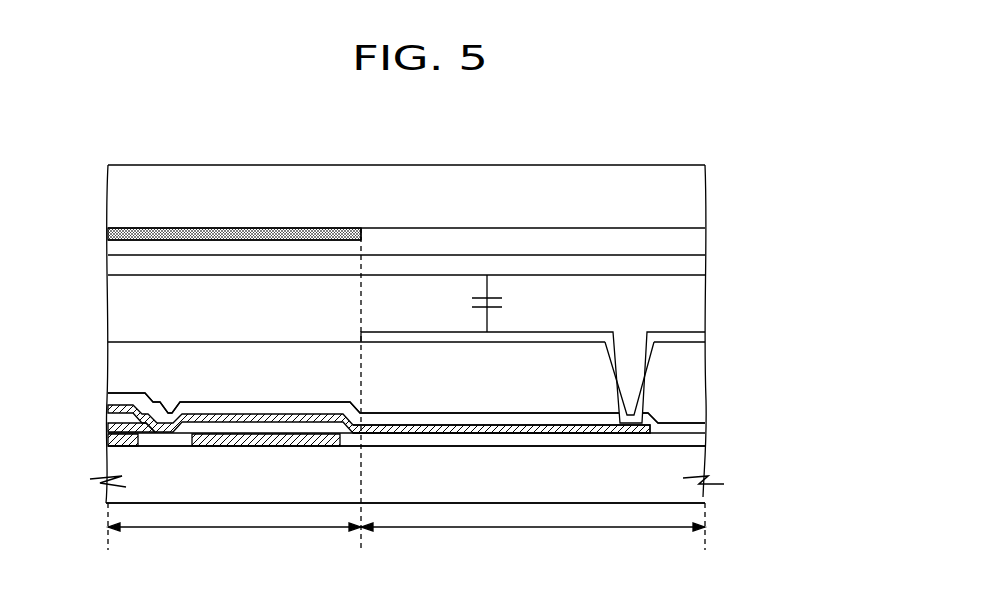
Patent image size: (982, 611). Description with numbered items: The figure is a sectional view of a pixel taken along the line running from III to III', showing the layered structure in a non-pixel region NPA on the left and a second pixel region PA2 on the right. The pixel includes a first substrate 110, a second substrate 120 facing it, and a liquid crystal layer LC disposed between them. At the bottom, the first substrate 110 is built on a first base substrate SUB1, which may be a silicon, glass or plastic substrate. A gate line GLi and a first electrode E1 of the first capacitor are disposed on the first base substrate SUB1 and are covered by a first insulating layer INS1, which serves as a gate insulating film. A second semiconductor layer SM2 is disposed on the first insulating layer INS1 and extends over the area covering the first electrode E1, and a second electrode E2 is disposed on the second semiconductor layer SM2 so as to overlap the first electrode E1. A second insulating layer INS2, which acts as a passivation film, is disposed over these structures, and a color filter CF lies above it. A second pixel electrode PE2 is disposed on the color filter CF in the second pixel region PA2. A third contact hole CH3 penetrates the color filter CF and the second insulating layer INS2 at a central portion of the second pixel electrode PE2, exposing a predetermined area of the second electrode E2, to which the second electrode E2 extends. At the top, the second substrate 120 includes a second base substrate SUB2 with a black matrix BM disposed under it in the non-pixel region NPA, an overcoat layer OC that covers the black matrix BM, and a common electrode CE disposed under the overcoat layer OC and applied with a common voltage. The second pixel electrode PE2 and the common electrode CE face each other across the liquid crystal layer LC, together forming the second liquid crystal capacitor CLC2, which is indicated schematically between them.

The second base substrate SUB2 is at (693, 193).
The black matrix BM is at (112, 234).
The overcoat layer OC is at (693, 238).
The common electrode CE is at (693, 265).
The liquid crystal layer LC is at (693, 310).
The second substrate 120 is at (797, 188).
The second pixel electrode PE2 is at (401, 340).
The second liquid crystal capacitor CLC2 is at (513, 303).
The third contact hole CH3 is at (630, 349).
The color filter CF is at (693, 383).
The second insulating layer INS2 is at (693, 430).
The second semiconductor layer SM2 is at (118, 417).
The second electrode E2 is at (527, 433).
The first electrode E1 is at (115, 431).
The first insulating layer INS1 is at (693, 442).
The gate line GLi is at (246, 447).
The first base substrate SUB1 is at (693, 465).
The first substrate 110 is at (797, 375).
The non-pixel region NPA is at (234, 540).
The second pixel region PA2 is at (533, 540).
The section line III is at (108, 566).
The section line III' is at (708, 566).